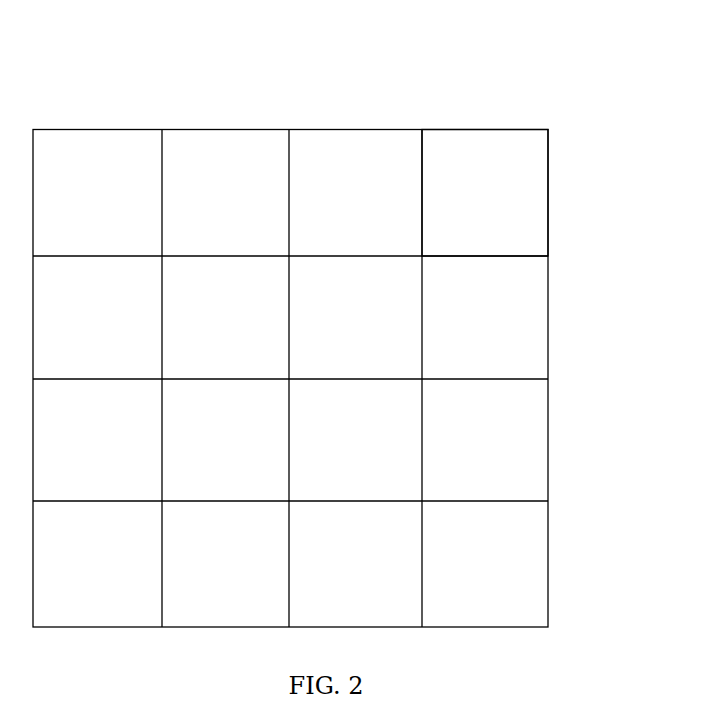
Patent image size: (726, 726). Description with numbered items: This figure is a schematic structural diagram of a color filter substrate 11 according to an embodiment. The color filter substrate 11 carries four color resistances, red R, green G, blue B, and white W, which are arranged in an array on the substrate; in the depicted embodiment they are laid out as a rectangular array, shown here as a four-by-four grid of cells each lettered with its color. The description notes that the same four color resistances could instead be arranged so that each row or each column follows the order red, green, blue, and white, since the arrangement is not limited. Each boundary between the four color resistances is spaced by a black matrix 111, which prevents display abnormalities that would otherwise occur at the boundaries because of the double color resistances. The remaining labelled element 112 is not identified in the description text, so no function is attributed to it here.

The color filter substrate 11 is at (294, 107).
The black matrix 111 is at (523, 130).
The sub-pixel color labels R/G/B/W (no numeral printed on this sheet; group added on 112 is at (285, 378).